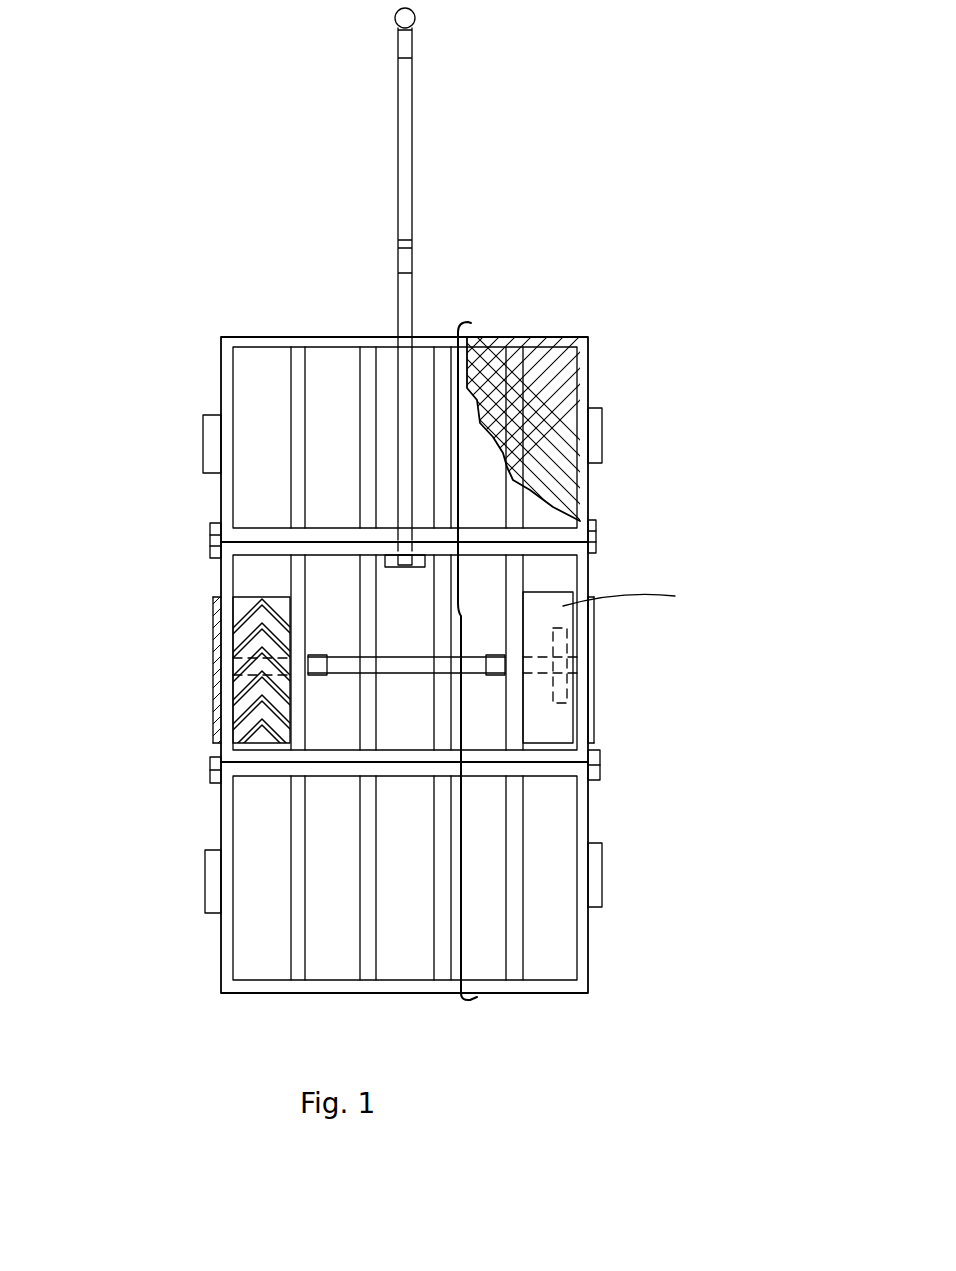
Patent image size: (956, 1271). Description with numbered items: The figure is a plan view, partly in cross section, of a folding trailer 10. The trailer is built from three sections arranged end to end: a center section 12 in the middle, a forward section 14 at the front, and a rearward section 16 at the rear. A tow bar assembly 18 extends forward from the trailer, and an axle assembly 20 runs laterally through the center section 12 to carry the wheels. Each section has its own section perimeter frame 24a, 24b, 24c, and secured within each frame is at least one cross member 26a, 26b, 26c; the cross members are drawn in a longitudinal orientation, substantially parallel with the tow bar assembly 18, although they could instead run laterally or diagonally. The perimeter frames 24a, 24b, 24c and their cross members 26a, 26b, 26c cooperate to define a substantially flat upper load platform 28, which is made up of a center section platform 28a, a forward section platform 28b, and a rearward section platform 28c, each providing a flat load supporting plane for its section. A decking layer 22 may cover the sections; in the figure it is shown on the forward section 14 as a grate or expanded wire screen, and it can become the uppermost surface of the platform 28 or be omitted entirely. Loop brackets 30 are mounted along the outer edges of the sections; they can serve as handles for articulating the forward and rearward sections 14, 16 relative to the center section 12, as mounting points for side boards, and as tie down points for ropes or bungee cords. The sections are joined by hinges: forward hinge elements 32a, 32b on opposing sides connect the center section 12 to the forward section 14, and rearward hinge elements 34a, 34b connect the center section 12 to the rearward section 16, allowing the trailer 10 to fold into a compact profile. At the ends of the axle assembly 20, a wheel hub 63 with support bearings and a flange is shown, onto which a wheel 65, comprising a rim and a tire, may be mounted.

The folding trailer 10 is at (712, 325).
The center section 12 is at (602, 575).
The forward section 14 is at (612, 382).
The rearward section 16 is at (633, 821).
The tow bar assembly 18 is at (435, 136).
The axle assembly 20 is at (478, 688).
The decking layer 22 is at (583, 327).
The section perimeter frame 24a is at (228, 573).
The section perimeter frame 24b is at (218, 368).
The section perimeter frame 24c is at (230, 813).
The cross member 26a is at (298, 573).
The cross member 26b is at (297, 358).
The cross member 26c is at (300, 840).
The upper load platform 28 is at (456, 608).
The center section platform 28a is at (338, 717).
The forward section platform 28b is at (541, 350).
The rearward section platform 28c is at (553, 945).
The loop bracket 30 is at (203, 443).
The forward hinge element 32a is at (203, 540).
The forward hinge element 32b is at (608, 532).
The rearward hinge element 34a is at (203, 762).
The rearward hinge element 34b is at (618, 765).
The wheel hub 63 is at (195, 707).
The wheel 65 is at (250, 602).